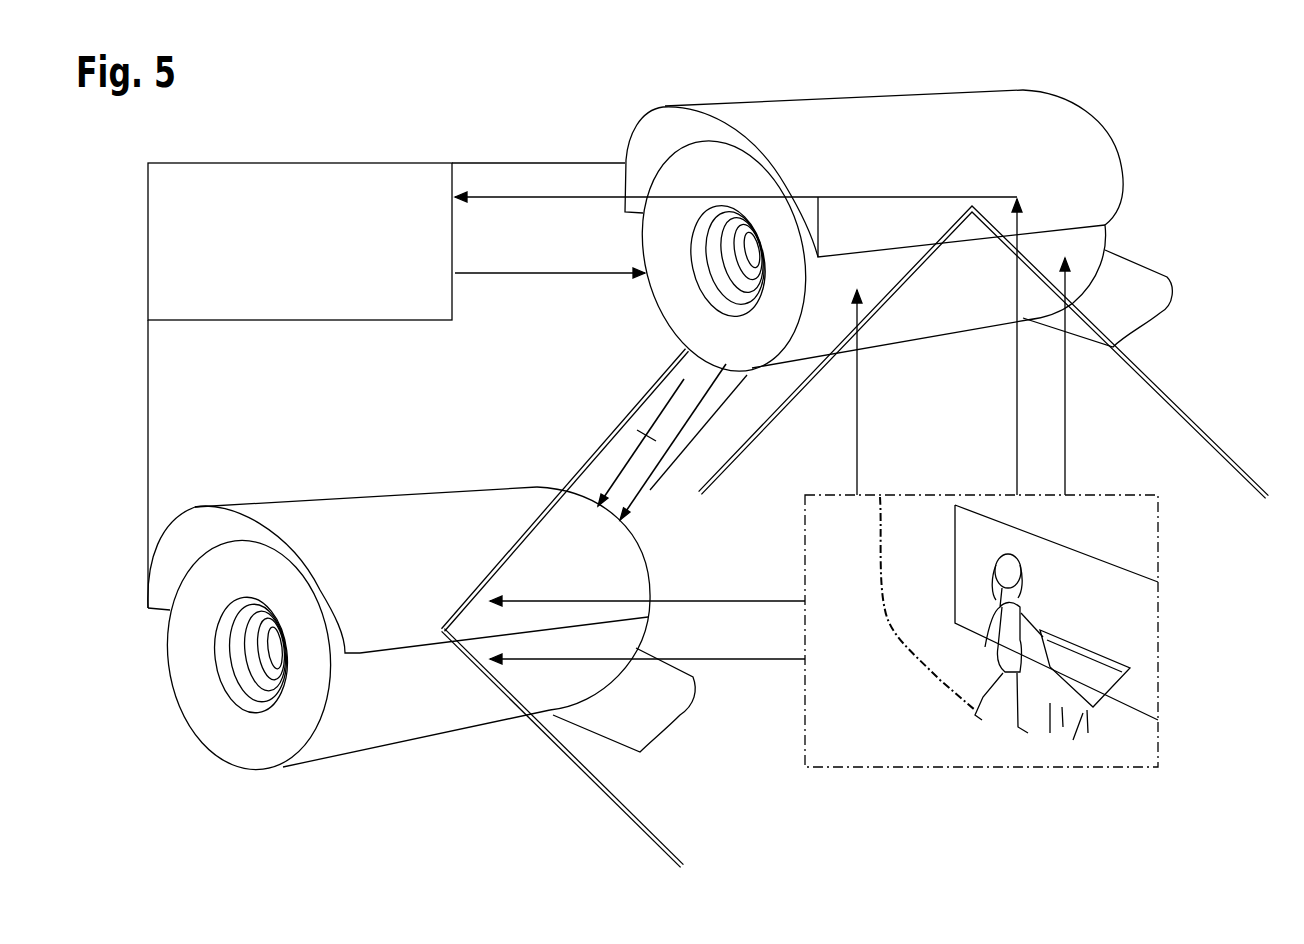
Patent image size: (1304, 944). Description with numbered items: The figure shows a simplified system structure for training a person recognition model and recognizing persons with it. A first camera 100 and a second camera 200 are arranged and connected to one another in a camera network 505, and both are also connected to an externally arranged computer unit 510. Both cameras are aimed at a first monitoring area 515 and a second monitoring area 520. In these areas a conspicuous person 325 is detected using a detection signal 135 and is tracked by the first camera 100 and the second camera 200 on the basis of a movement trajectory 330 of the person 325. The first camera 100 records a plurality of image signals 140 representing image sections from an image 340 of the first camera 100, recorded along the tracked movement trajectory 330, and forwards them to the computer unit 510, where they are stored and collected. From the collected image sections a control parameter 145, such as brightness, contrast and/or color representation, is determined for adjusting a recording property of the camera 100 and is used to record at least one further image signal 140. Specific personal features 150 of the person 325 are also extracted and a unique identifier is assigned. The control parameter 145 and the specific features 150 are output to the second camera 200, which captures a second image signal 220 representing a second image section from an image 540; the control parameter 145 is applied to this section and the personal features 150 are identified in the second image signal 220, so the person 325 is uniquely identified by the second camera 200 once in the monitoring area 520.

The first camera 100 is at (1123, 174).
The second camera 200 is at (268, 503).
The externally arranged computer unit 510 is at (398, 322).
The camera network 505 is at (582, 462).
The first monitoring area 515 is at (1150, 430).
The second monitoring area 520 is at (703, 752).
The image signals 140 is at (525, 197).
The control parameter 145 is at (503, 275).
The specific personal features 150 is at (659, 477).
The detection signal 135 is at (745, 601).
The second image signal 220 is at (741, 661).
The image 340 is at (1002, 672).
The image 540 is at (1123, 770).
The movement trajectory 330 is at (972, 712).
The person 325 is at (1022, 742).